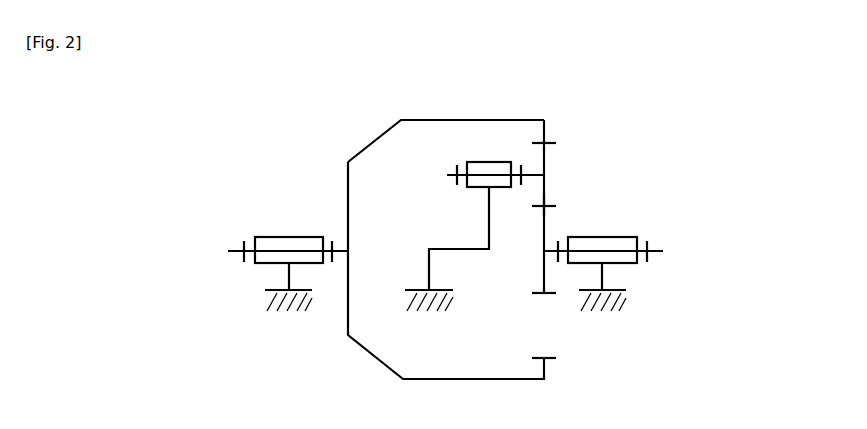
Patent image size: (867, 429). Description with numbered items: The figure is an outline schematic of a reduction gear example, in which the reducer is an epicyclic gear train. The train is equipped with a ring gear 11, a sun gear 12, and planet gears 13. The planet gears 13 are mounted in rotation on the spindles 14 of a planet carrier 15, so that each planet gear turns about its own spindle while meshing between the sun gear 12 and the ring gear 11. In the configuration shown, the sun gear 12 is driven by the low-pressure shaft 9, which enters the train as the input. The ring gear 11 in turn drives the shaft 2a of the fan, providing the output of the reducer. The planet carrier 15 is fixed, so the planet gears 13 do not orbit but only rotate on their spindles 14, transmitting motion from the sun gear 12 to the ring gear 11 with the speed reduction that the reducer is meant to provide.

The shaft of the fan 2a is at (237, 248).
The low-pressure shaft 9 is at (657, 248).
The ring gear 11 is at (480, 119).
The sun gear 12 is at (546, 222).
The planet gears 13 is at (546, 160).
The spindles 14 is at (447, 172).
The planet carrier 15 is at (488, 216).